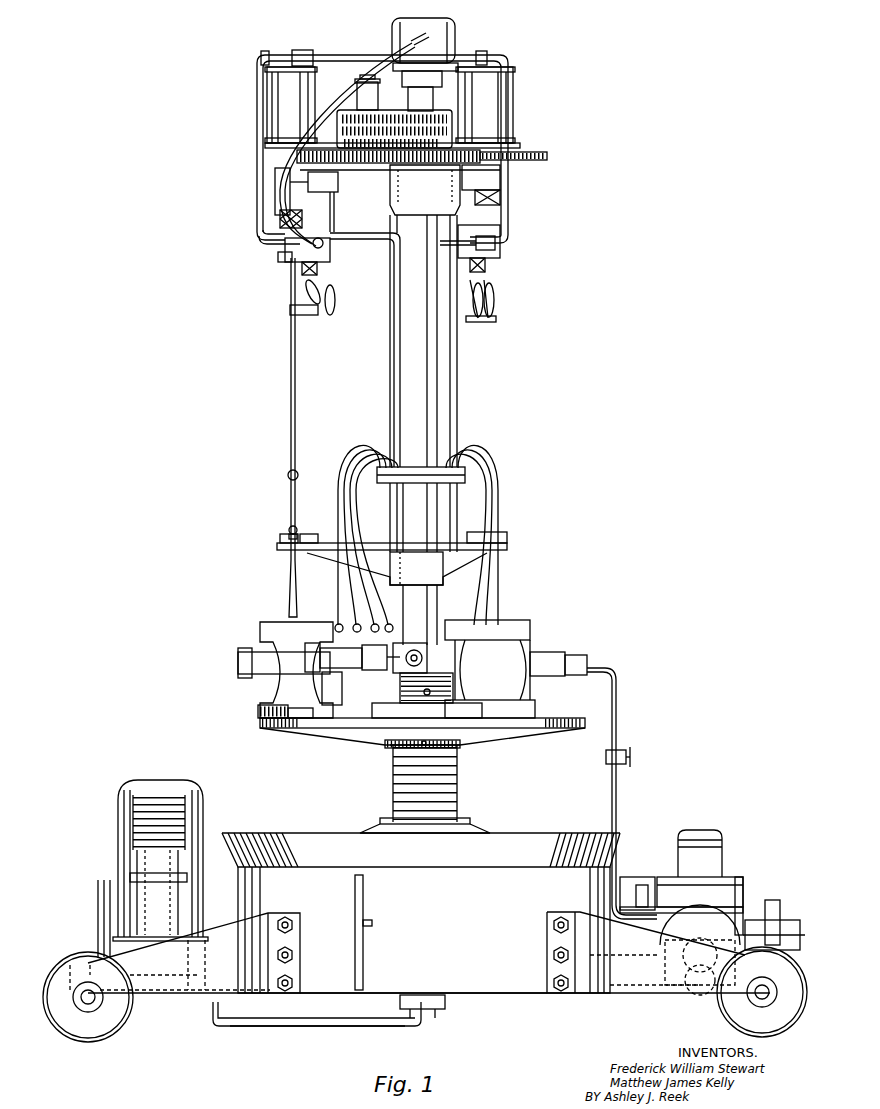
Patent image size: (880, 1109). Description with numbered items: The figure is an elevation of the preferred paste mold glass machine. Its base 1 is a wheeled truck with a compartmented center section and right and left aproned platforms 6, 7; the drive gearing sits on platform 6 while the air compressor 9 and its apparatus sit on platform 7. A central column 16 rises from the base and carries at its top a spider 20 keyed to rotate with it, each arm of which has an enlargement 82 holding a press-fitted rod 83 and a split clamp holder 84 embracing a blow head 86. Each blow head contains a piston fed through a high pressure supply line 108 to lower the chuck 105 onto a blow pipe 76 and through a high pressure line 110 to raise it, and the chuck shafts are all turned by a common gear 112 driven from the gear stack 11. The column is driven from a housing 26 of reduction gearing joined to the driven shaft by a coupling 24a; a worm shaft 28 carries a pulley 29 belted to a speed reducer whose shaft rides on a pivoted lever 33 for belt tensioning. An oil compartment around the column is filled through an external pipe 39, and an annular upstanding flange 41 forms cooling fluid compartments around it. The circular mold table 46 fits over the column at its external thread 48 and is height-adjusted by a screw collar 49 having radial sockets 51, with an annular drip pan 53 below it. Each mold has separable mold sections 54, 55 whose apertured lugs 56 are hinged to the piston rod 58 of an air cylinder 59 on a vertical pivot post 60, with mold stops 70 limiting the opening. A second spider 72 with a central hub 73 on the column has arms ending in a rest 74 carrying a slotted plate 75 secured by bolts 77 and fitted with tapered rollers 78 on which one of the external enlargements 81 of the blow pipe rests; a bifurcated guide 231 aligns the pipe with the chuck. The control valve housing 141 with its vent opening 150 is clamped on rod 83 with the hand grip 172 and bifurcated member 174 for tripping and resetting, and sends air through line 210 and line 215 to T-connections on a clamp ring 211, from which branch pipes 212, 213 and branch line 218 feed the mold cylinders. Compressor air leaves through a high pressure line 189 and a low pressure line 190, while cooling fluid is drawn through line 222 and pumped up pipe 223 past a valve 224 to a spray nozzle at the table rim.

The base 1 is at (505, 995).
The right aproned platform 6 is at (638, 995).
The left aproned platform 7 is at (158, 995).
The air compressor 9 is at (118, 822).
The gear stack 11 is at (358, 92).
The column 16 is at (397, 505).
The spider 20 is at (386, 190).
The coupling 24a is at (636, 877).
The housing 26 is at (670, 877).
The worm shaft 28 is at (745, 895).
The pulley 29 is at (775, 903).
The pivoted lever 33 is at (790, 942).
The pipe 39 is at (363, 955).
The annular upstanding flange 41 is at (238, 868).
The circular mold table 46 is at (548, 736).
The external thread 48 is at (457, 773).
The screw collar 49 is at (460, 745).
The radial sockets 51 is at (390, 744).
The annular drip pan 53 is at (618, 840).
The mold section 54 is at (485, 680).
The mold section 55 is at (530, 688).
The apertured lug 56 is at (255, 676).
The piston rod 58 is at (290, 668).
The air cylinder 59 is at (350, 675).
The vertical pivot post 60 is at (380, 702).
The mold stops 70 is at (258, 713).
The spider 72 is at (345, 568).
The central hub 73 is at (412, 578).
The rest 74 is at (290, 556).
The slotted plate 75 is at (277, 546).
The blow pipe 76 is at (291, 382).
The bolts 77 is at (316, 535).
The tapered rollers 78 is at (280, 536).
The external enlargements 81 is at (288, 475).
The enlargement 82 is at (338, 182).
The rod 83 is at (334, 204).
The split clamp holder 84 is at (500, 181).
The blow head 86 is at (267, 98).
The chuck 105 is at (275, 226).
The high pressure supply line 108 is at (268, 214).
The high pressure line 110 is at (275, 188).
The gear 112 is at (548, 156).
The valve housing 141 is at (495, 243).
The vent opening 150 is at (500, 255).
The hand grip 172 is at (335, 302).
The bifurcated member 174 is at (492, 288).
The high pressure line 189 is at (213, 1020).
The low pressure line 190 is at (290, 1030).
The line 210 is at (372, 242).
The clamp ring 211 is at (424, 468).
The branch pipe 212 is at (356, 593).
The branch pipe 213 is at (372, 552).
The line 215 is at (390, 360).
The branch line 218 is at (400, 635).
The line 222 is at (642, 960).
The pipe 223 is at (570, 662).
The valve 224 is at (606, 757).
The bifurcated guide 231 is at (278, 259).